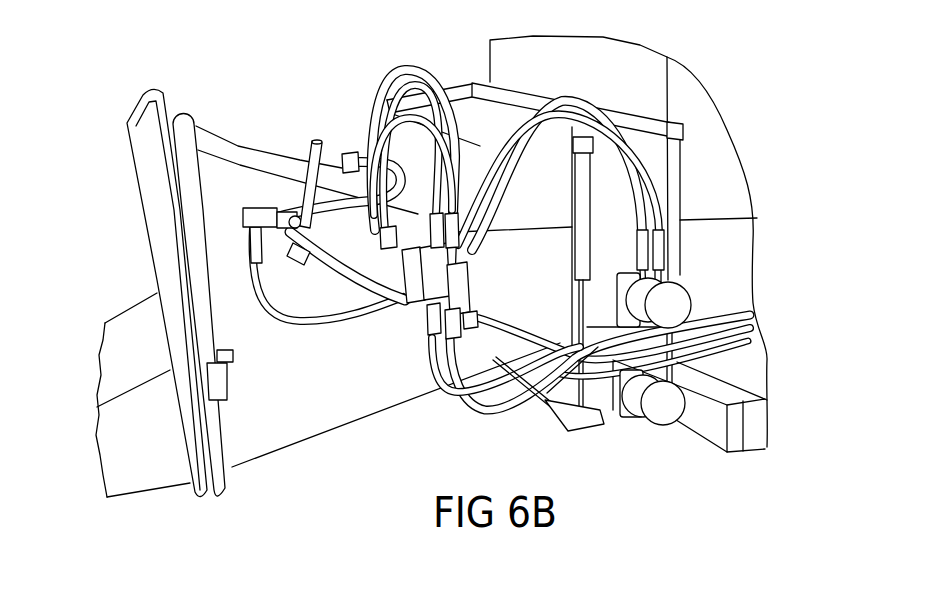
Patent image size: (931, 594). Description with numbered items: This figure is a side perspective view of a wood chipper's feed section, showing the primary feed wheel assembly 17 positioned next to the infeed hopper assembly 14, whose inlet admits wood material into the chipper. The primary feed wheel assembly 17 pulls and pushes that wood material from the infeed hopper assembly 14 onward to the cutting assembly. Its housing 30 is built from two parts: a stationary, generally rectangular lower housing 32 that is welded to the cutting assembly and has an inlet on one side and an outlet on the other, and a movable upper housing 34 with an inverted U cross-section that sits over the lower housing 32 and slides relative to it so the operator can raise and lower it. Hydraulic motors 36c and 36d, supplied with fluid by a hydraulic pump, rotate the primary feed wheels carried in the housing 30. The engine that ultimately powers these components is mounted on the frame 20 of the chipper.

The infeed hopper assembly 14 is at (303, 410).
The primary feed wheel assembly 17 is at (622, 403).
The frame 20 is at (714, 432).
The housing 30 is at (668, 167).
The lower housing 32 is at (656, 342).
The upper housing 34 is at (658, 146).
The hydraulic motor 36c is at (664, 420).
The hydraulic motor 36d is at (673, 303).